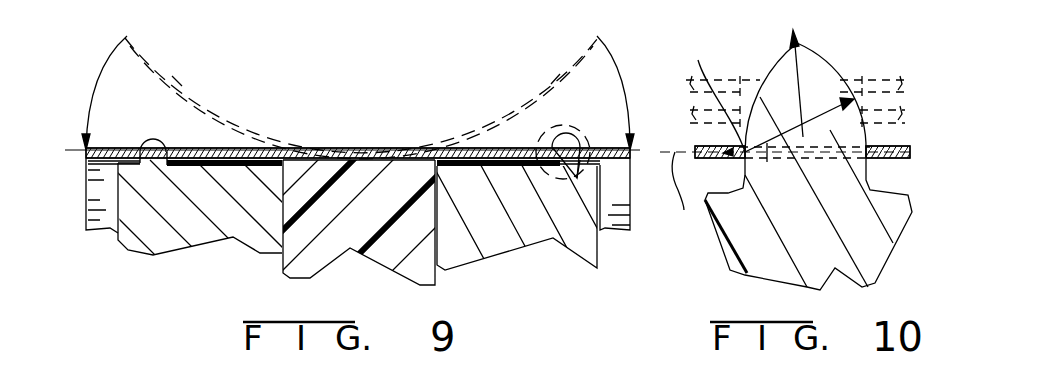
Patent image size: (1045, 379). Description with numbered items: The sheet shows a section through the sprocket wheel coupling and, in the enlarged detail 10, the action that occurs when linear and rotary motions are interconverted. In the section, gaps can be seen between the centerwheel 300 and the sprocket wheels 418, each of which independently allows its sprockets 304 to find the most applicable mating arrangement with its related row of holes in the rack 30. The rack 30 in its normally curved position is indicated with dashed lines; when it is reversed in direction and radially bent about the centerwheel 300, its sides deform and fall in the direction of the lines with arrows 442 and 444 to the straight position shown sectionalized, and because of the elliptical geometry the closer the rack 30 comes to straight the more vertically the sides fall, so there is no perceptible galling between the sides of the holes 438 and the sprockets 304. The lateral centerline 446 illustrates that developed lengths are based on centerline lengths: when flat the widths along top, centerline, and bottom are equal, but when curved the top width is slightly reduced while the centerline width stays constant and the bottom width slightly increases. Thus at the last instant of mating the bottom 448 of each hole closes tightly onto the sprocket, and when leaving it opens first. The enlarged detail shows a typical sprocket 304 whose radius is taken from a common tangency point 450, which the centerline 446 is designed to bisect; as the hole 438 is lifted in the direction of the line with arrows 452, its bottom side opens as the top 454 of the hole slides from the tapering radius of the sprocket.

In FIG. 9, the enlarged detail view 10 is at (540, 126).
In FIG. 9, the rack 30 is at (257, 147).
In FIG. 10, the rack 30 is at (700, 52).
In FIG. 9, the centerwheel 300 is at (367, 251).
In FIG. 9, the sprocket 304 is at (577, 140).
In FIG. 10, the sprocket 304 is at (780, 63).
In FIG. 9, the sprocket wheel 418 is at (547, 242).
In FIG. 9, the hole 438 is at (550, 62).
In FIG. 10, the hole 438 is at (768, 163).
In FIG. 9, the line with arrow 442 is at (622, 76).
In FIG. 9, the line with arrow 444 is at (92, 108).
In FIG. 9, the lateral centerline 446 is at (67, 155).
In FIG. 10, the lateral centerline 446 is at (674, 191).
In FIG. 9, the bottom of hole 448 is at (578, 180).
In FIG. 10, the bottom of hole 448 is at (861, 162).
In FIG. 10, the common tangency point 450 is at (733, 152).
In FIG. 10, the line with arrows 452 is at (800, 64).
In FIG. 10, the top of hole 454 is at (868, 150).